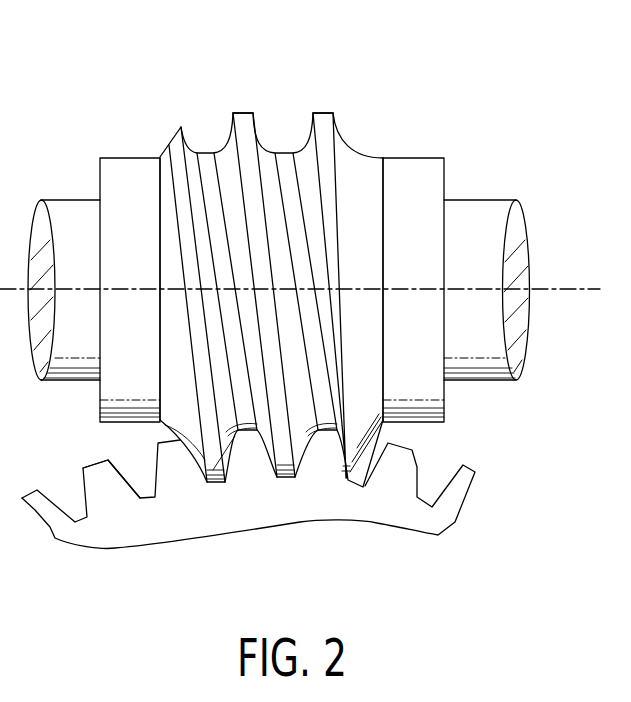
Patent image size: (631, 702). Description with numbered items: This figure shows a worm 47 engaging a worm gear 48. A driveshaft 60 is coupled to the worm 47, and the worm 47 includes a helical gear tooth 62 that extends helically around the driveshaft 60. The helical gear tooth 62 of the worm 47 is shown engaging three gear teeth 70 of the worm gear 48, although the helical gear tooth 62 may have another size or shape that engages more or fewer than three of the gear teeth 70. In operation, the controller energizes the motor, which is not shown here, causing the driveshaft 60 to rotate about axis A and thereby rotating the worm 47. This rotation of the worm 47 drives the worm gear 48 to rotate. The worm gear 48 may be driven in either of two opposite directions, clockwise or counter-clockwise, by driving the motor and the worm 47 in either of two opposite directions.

The worm 47 is at (356, 143).
The worm gear 48 is at (382, 492).
The driveshaft 60 is at (478, 221).
The helical gear tooth 62 is at (315, 112).
The gear teeth 70 is at (247, 452).
The axis A is at (567, 287).